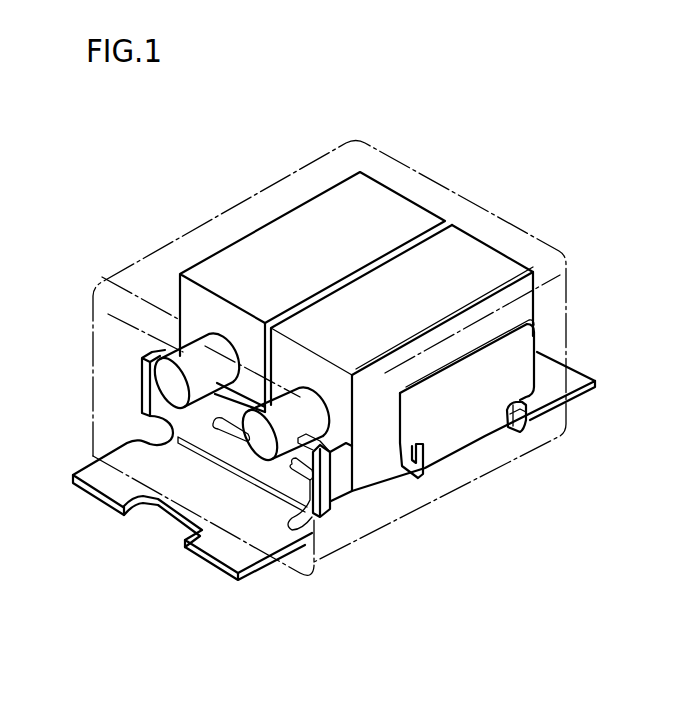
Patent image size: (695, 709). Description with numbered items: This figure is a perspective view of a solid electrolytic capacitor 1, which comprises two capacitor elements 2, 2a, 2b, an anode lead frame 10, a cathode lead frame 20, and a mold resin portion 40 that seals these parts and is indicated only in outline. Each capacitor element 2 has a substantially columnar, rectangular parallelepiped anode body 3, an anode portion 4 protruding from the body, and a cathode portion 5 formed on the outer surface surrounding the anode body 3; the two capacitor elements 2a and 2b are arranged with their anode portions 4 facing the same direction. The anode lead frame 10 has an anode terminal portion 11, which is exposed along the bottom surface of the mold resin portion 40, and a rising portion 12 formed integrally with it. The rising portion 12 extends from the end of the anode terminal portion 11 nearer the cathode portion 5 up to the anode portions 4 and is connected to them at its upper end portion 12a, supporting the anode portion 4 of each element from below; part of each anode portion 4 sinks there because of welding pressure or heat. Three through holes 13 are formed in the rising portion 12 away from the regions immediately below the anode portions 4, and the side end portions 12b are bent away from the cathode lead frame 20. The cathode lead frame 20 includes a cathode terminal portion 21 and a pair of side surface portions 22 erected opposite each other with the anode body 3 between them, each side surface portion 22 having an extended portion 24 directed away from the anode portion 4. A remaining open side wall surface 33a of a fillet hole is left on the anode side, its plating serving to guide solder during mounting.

The solid electrolytic capacitor 1 is at (362, 132).
The capacitor element 2 is at (340, 289).
The capacitor element 2a is at (398, 120).
The capacitor element 2b is at (193, 120).
The anode body 3 is at (273, 250).
The anode portion 4 is at (212, 345).
The cathode portion 5 is at (337, 215).
The anode lead frame 10 is at (185, 626).
The anode terminal portion 11 is at (236, 555).
The rising portion 12 is at (284, 473).
The upper end portion 12a is at (336, 456).
The side end portion 12b is at (142, 384).
The through hole 13 is at (220, 434).
The cathode lead frame 20 is at (575, 519).
The cathode terminal portion 21 is at (557, 382).
The side surface portion 22 is at (470, 394).
The extended portion 24 is at (513, 372).
The open side wall surface 33a is at (156, 505).
The mold resin portion 40 is at (530, 237).